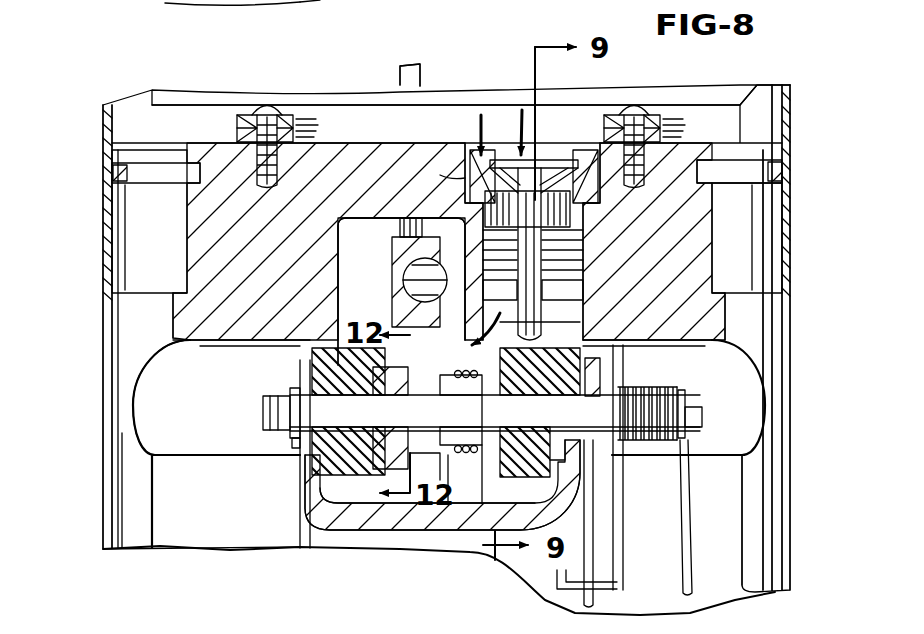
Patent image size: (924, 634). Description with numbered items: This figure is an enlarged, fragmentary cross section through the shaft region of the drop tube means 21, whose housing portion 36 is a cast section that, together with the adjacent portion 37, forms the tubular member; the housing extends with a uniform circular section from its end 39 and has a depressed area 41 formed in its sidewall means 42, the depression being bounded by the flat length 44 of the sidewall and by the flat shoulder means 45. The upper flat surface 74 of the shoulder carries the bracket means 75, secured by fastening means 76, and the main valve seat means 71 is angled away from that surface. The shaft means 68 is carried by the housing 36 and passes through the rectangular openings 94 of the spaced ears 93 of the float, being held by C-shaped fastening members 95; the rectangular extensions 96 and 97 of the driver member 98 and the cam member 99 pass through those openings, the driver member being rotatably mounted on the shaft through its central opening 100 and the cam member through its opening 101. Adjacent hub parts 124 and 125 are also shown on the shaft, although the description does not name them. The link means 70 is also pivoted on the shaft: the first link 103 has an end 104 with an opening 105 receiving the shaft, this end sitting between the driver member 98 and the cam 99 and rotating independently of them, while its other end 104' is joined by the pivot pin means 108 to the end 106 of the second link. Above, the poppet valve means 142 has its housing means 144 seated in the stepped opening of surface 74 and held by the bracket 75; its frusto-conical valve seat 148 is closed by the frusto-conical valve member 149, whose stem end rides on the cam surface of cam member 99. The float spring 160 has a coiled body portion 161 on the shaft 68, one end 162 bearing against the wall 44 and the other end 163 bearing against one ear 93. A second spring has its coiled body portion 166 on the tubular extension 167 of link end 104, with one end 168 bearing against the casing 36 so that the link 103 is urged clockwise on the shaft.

The tubular member 21 is at (94, 155).
The housing portion 36 is at (284, 0).
The portion 37 is at (793, 118).
The end of portion 39 is at (770, 92).
The depressed area 41 is at (725, 494).
The sidewall means 42 is at (790, 452).
The flat length of sidewall 44 is at (327, 0).
The shoulder means 45 is at (358, 522).
The shaft means 68 is at (702, 425).
The link means 70 is at (414, 68).
The main valve seat means 71 is at (735, 95).
The upper flat surface 74 is at (334, 142).
The bracket means 75 is at (237, 136).
The fastening means 76 is at (270, 104).
The ears 93 is at (600, 547).
The openings 94 is at (608, 478).
The C-shaped fastening members 95 is at (688, 400).
The rectangular extension 96 is at (266, 412).
The rectangular extension 97 is at (602, 384).
The driver member 98 is at (296, 383).
The cam member 99 is at (565, 348).
The central opening 100 is at (303, 549).
The opening 101 is at (540, 428).
The first link 103 is at (410, 283).
The end of first link 104 is at (427, 525).
The other end of first link 104' is at (402, 201).
The opening 105 is at (480, 412).
The end of second link 106 is at (372, 228).
The pivot pin means 108 is at (397, 258).
The gear hub 124 is at (348, 411).
The bushing 125 is at (388, 390).
The poppet valve means 142 is at (519, 128).
The housing means 144 is at (465, 176).
The frusto-conical valve seat 148 is at (577, 156).
The frusto-conical valve member 149 is at (507, 165).
The spring 160 is at (690, 372).
The coiled body portion 161 is at (655, 445).
The end of spring 162 is at (684, 506).
The other end of spring 163 is at (600, 585).
The coiled body portion 166 is at (456, 458).
The tubular extension 167 is at (468, 392).
The end of spring 168 is at (472, 455).